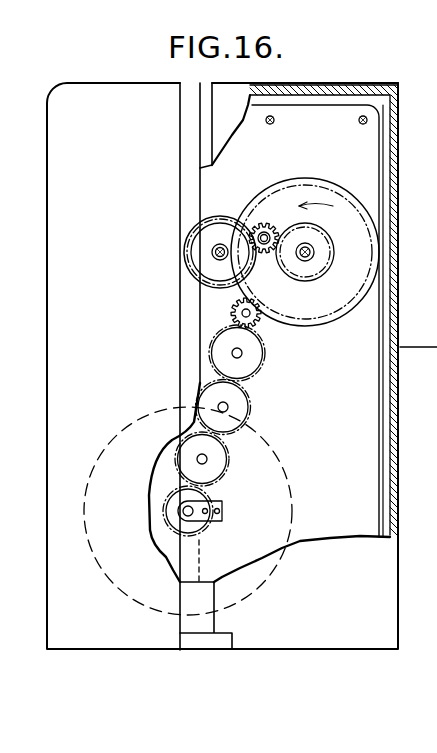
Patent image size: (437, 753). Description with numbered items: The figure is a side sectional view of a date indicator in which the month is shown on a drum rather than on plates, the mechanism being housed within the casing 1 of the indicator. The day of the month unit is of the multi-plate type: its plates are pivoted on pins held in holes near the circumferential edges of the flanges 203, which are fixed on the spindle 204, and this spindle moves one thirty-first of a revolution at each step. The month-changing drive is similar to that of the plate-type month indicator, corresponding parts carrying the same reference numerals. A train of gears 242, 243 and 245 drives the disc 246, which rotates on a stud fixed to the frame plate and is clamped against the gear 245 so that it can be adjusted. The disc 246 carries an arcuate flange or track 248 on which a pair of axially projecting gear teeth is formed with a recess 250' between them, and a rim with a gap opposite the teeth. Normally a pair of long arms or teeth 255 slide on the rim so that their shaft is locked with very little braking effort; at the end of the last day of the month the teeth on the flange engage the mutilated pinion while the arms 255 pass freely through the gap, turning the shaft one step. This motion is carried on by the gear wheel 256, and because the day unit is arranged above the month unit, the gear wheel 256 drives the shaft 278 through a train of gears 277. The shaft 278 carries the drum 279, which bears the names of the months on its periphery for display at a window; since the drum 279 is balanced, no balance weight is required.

The housing 1 is at (70, 170).
The flanges 203 is at (209, 222).
The spindle 204 is at (215, 252).
The gear 242 is at (318, 270).
The gear 243 is at (256, 224).
The gear 245 is at (212, 264).
The disc 246 is at (319, 312).
The arcuate flange 248 is at (322, 178).
The recess 250' is at (305, 228).
The long arms 255 is at (236, 316).
The gear wheel 256 is at (233, 306).
The train of gears 277 is at (252, 365).
The shaft 278 is at (183, 512).
The drum 279 is at (293, 512).